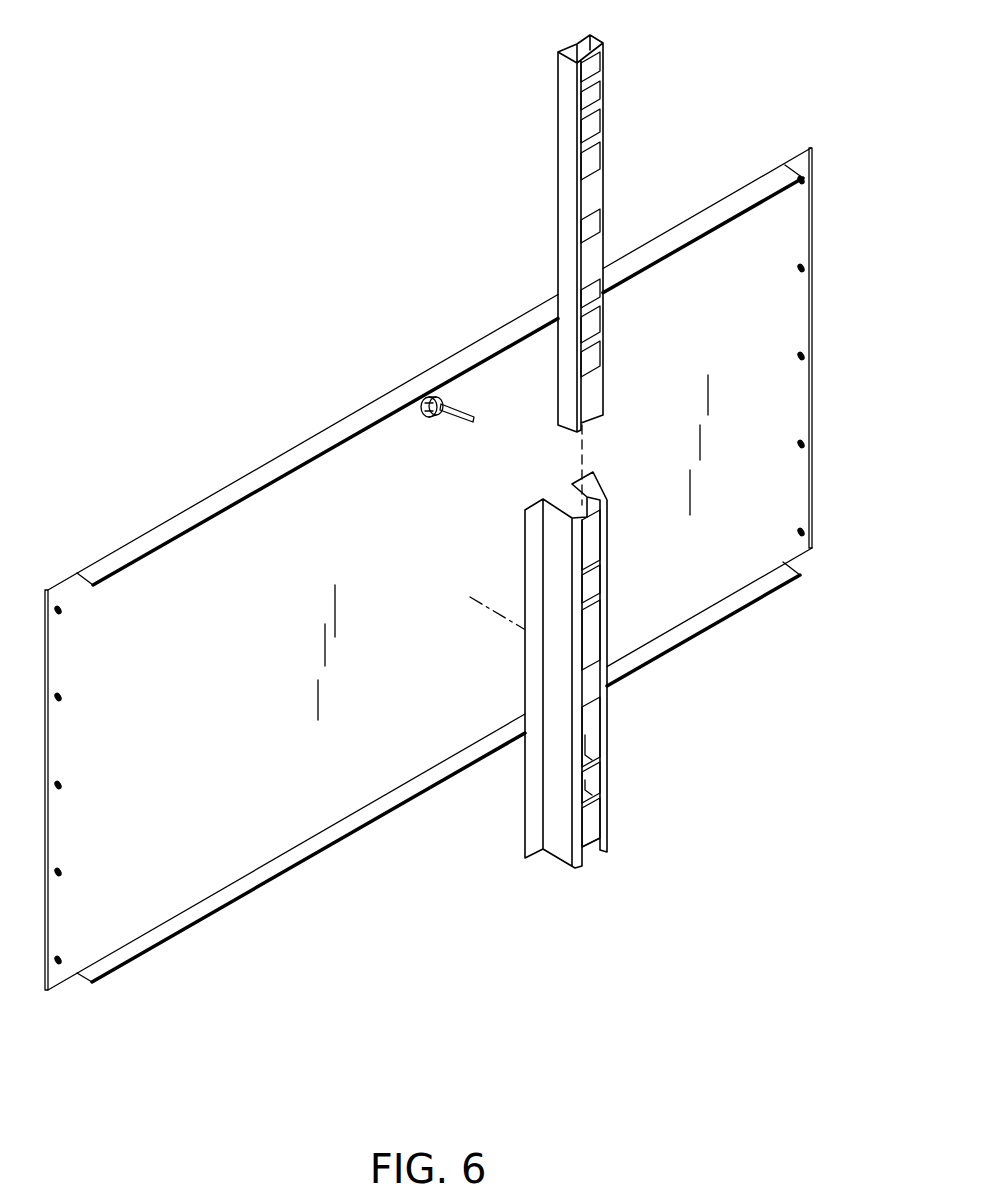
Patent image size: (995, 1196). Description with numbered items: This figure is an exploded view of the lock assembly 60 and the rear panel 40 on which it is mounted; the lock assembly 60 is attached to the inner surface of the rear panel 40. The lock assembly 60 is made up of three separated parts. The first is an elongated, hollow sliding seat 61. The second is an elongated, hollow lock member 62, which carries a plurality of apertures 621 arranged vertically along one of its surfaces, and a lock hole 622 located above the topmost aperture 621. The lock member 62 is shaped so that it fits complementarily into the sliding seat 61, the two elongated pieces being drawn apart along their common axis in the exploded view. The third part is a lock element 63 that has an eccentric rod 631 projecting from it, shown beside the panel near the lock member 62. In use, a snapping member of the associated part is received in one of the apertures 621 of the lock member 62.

The rear panel 40 is at (346, 485).
The lock assembly 60 is at (622, 337).
The sliding seat 61 is at (563, 850).
The lock member 62 is at (593, 192).
The apertures 621 is at (598, 120).
The lock hole 622 is at (600, 63).
The lock element 63 is at (426, 396).
The eccentric rod 631 is at (462, 410).